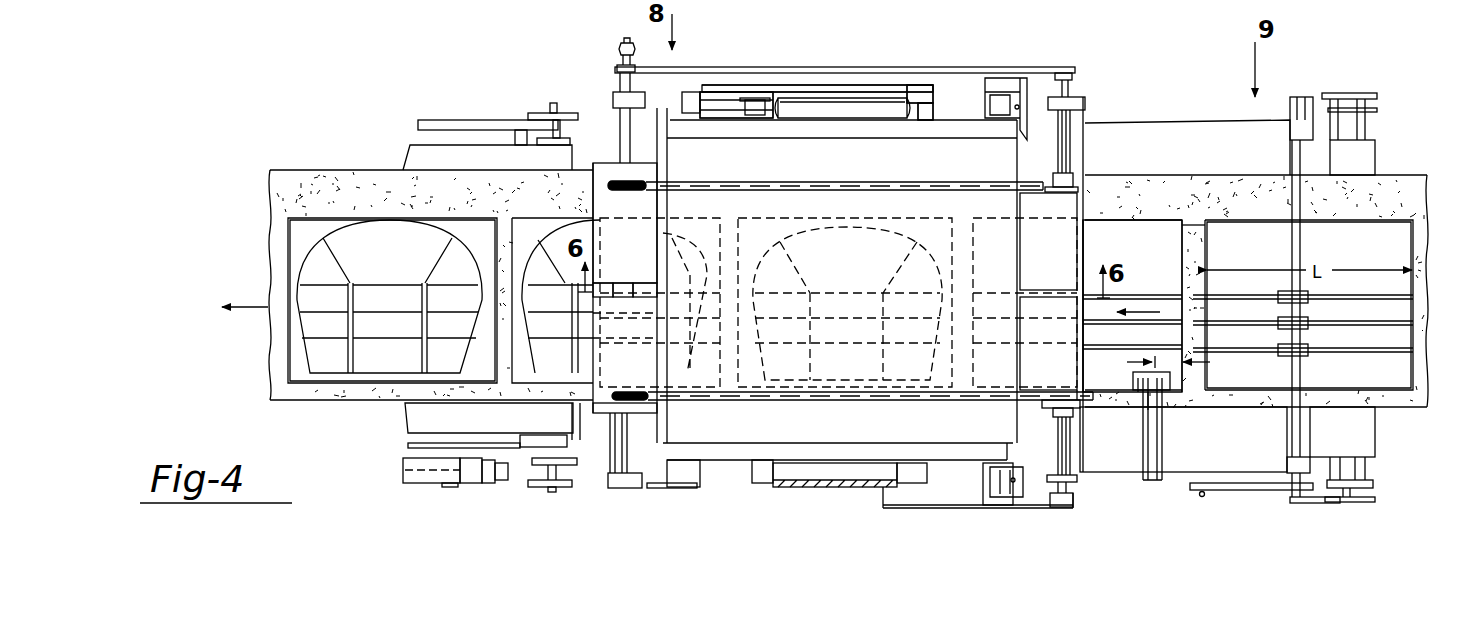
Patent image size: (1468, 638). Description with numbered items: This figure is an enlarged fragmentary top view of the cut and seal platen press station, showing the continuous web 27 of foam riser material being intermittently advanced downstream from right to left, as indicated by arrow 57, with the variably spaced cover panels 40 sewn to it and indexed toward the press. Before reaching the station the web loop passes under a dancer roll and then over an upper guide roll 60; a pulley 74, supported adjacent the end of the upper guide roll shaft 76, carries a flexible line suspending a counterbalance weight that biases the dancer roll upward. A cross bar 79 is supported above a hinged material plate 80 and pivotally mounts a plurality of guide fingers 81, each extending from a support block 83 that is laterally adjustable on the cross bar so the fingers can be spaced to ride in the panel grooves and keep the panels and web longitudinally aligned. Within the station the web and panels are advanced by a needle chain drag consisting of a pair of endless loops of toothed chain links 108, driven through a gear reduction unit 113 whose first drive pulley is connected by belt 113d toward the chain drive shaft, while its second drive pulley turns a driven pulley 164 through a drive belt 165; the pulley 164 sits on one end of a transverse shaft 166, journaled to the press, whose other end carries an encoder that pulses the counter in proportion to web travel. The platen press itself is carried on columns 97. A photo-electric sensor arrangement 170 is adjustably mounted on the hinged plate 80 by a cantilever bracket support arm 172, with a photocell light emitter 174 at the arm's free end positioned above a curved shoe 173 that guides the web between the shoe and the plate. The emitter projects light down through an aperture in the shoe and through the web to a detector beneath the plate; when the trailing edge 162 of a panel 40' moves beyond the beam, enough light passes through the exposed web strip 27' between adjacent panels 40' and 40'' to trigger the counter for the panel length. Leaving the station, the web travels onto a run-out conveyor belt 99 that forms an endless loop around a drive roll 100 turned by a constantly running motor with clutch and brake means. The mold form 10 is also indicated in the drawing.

The mold form / cavity liner 10 is at (300, 345).
The web 27 is at (860, 273).
The exposed web strip 27' is at (1220, 309).
The cover panels 40 is at (579, 291).
The panel 40' is at (1132, 266).
The panel 40'' is at (1320, 246).
The arrow 57 is at (1170, 270).
The upper guide roll 60 is at (1368, 420).
The pulley 74 is at (1372, 110).
The upper guide roll shaft 76 is at (1362, 473).
The cross bar 79 is at (1290, 152).
The hinged material plate 80 is at (1108, 132).
The guide fingers 81 is at (1222, 301).
The support block 83 is at (1308, 300).
The columns 97 is at (823, 487).
The conveyor belt 99 is at (410, 413).
The drive roll 100 is at (543, 437).
The toothed chain links 108 is at (710, 186).
The gear reduction unit 113 is at (713, 102).
The belt 113d is at (738, 97).
The trailing edge 162 is at (1187, 236).
The driven pulley 164 is at (922, 86).
The drive belt 165 is at (808, 86).
The transverse shaft 166 is at (923, 110).
The photo-electric sensor arrangement 170 is at (1123, 380).
The cantilever bracket support arm 172 is at (1163, 458).
The curved shoe 173 is at (1140, 380).
The photocell light emitter 174 is at (1160, 392).